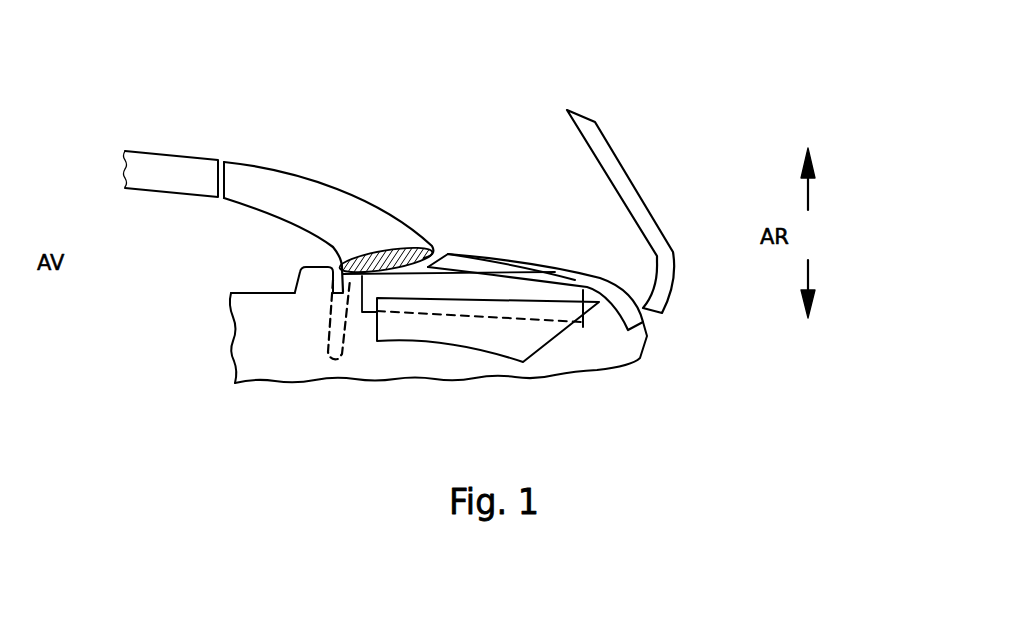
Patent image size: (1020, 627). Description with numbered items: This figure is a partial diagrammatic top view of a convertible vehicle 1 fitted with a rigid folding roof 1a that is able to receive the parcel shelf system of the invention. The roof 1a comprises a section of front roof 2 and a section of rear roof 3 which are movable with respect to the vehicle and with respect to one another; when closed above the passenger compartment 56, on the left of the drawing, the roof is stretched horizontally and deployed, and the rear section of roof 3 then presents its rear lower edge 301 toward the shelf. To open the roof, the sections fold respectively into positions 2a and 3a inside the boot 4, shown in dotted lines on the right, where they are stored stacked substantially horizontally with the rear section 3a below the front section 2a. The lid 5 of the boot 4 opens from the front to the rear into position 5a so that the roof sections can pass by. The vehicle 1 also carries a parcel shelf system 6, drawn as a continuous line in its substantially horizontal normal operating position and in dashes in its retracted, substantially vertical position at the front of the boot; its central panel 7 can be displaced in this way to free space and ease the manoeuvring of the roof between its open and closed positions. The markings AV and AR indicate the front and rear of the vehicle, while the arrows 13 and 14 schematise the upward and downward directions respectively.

The convertible vehicle 1 is at (662, 112).
The rigid folding roof 1a is at (287, 153).
The section of front roof 2 is at (175, 152).
The folded position of front roof section 2a is at (477, 255).
The section of rear roof 3 is at (322, 186).
The folded position of rear roof section 3a is at (554, 360).
The boot 4 is at (593, 348).
The boot lid 5 is at (553, 268).
The open position of boot lid 5a is at (650, 185).
The parcel shelf system 6 is at (379, 241).
The central panel 7 is at (328, 240).
The upward direction arrow 13 is at (808, 190).
The downward direction arrow 14 is at (808, 280).
The passenger compartment 56 is at (166, 223).
The rear lower edge of rear roof section 301 is at (432, 248).